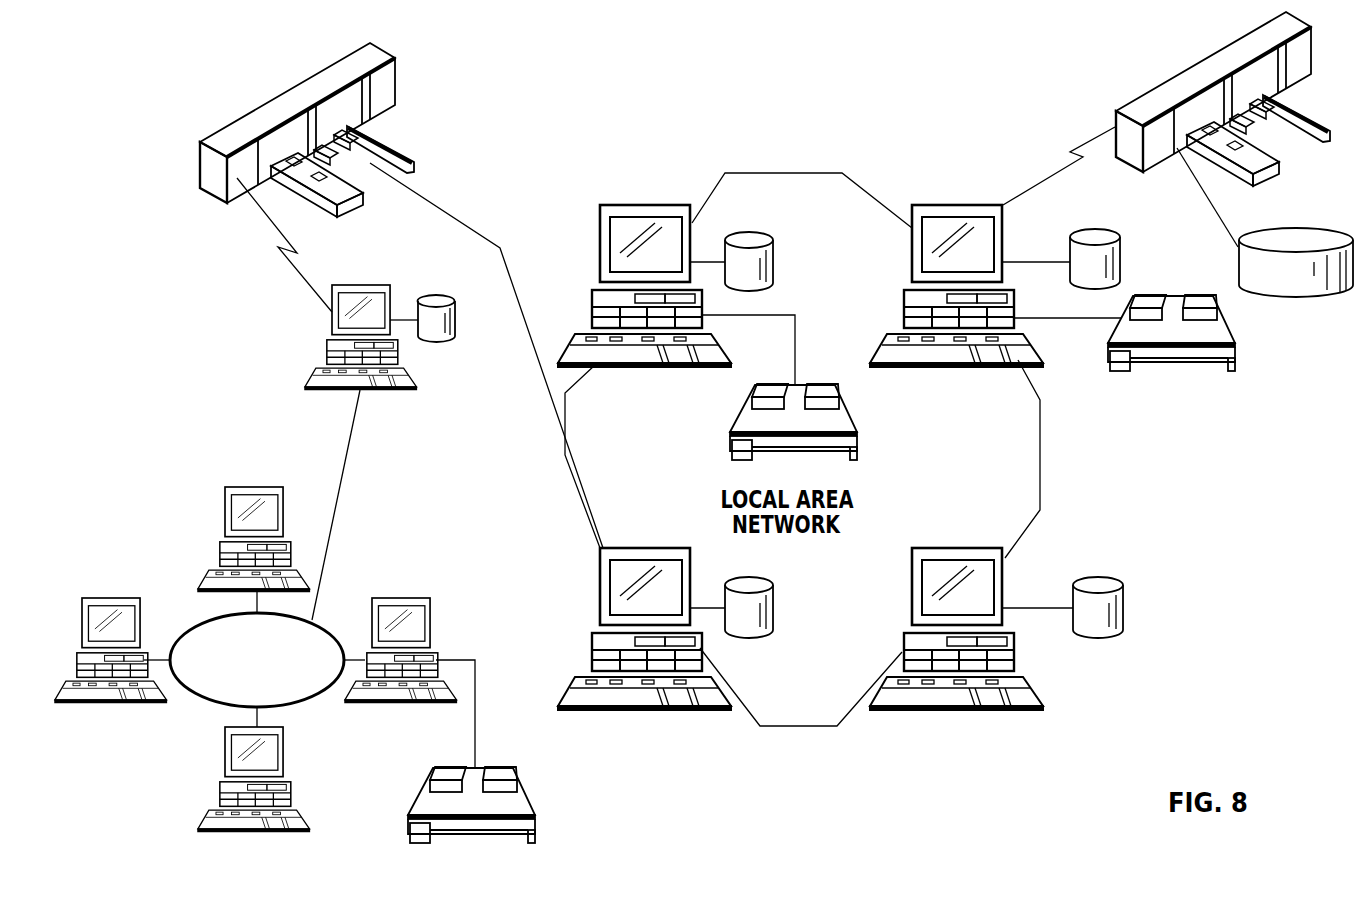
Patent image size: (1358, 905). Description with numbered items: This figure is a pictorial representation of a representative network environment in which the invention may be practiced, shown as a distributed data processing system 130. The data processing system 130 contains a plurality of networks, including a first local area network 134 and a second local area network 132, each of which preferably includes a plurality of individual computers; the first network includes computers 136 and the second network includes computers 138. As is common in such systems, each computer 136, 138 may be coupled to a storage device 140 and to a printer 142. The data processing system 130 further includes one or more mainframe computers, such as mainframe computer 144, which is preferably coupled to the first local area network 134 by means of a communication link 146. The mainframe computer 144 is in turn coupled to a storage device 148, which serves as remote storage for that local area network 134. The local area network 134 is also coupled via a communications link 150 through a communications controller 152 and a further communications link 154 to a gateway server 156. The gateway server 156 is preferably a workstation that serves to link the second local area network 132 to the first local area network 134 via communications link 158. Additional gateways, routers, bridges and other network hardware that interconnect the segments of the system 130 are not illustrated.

The distributed data processing system 130 is at (793, 162).
The local area network 132 is at (212, 700).
The local area network 134 is at (797, 728).
The computer 136 is at (618, 205).
The computer 138 is at (225, 514).
The storage device 140 is at (776, 265).
The printer 142 is at (843, 420).
The mainframe computer 144 is at (1135, 108).
The communication link 146 is at (1087, 141).
The storage device 148 is at (1292, 284).
The communications link 150 is at (462, 222).
The communications controller 152 is at (272, 108).
The communications link 154 is at (305, 282).
The gateway server 156 is at (373, 285).
The communications link 158 is at (347, 457).